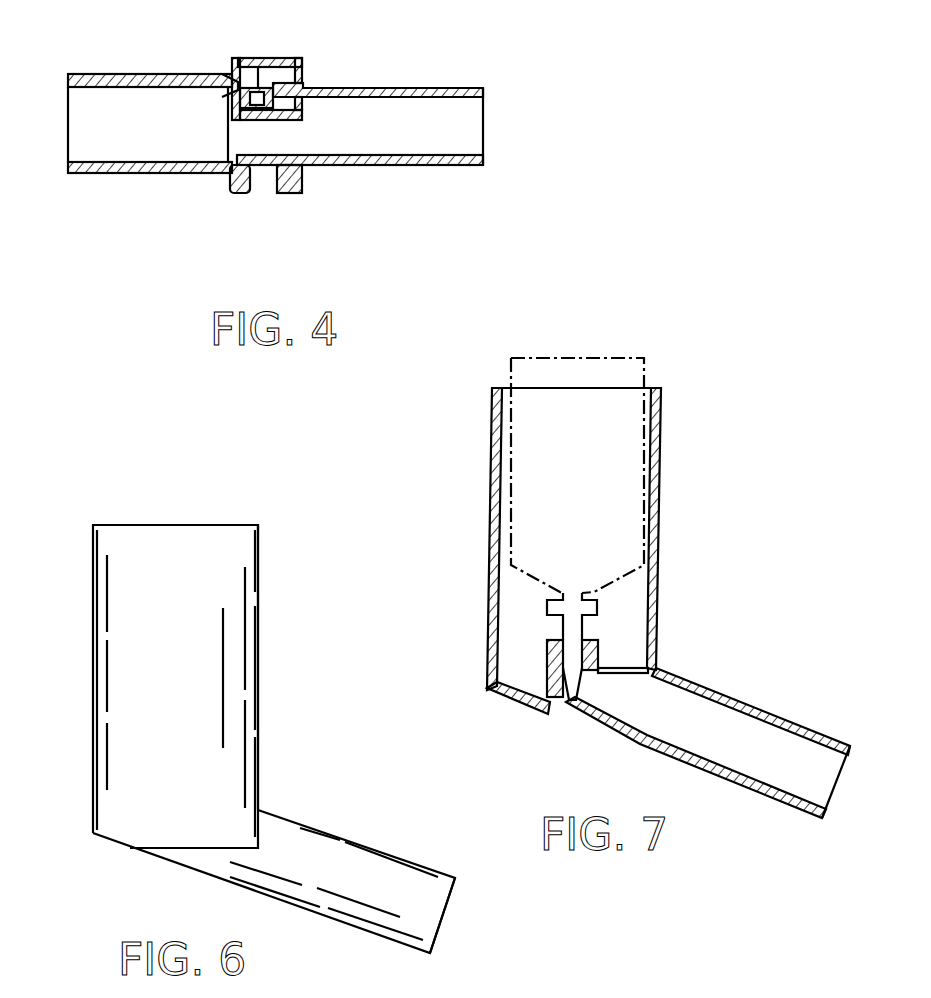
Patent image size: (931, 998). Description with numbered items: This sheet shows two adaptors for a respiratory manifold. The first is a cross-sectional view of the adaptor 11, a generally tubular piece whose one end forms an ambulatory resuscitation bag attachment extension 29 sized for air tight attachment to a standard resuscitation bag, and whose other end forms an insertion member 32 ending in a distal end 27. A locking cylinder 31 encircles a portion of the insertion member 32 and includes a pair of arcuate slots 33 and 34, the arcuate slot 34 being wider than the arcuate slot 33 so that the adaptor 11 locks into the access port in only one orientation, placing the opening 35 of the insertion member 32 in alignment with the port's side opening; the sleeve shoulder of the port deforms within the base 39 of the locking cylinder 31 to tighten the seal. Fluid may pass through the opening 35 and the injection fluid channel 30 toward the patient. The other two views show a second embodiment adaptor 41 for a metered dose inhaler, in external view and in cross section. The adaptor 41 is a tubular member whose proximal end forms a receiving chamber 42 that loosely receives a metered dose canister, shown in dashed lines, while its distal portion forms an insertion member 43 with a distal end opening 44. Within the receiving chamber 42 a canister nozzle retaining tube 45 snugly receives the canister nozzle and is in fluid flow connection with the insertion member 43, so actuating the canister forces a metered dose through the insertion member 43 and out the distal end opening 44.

In FIG. 4, the adaptor 11 is at (170, 188).
In FIG. 4, the distal end 27 is at (467, 168).
In FIG. 4, the ambulatory resuscitation bag attachment extension 29 is at (106, 72).
In FIG. 4, the injection fluid channel 30 is at (300, 100).
In FIG. 4, the locking cylinder 31 is at (296, 52).
In FIG. 4, the insertion member 32 is at (370, 168).
In FIG. 4, the arcuate slot 33 is at (265, 192).
In FIG. 4, the arcuate slot 34 is at (258, 57).
In FIG. 4, the opening 35 is at (303, 87).
In FIG. 4, the base 39 is at (232, 72).
In FIG. 6, the adaptor 41 is at (267, 714).
In FIG. 7, the adaptor 41 is at (670, 554).
In FIG. 6, the receiving chamber 42 is at (258, 592).
In FIG. 7, the receiving chamber 42 is at (663, 410).
In FIG. 6, the insertion member 43 is at (290, 837).
In FIG. 7, the insertion member 43 is at (708, 693).
In FIG. 6, the distal end opening 44 is at (445, 913).
In FIG. 7, the distal end opening 44 is at (850, 750).
In FIG. 7, the canister nozzle retaining tube 45 is at (550, 658).